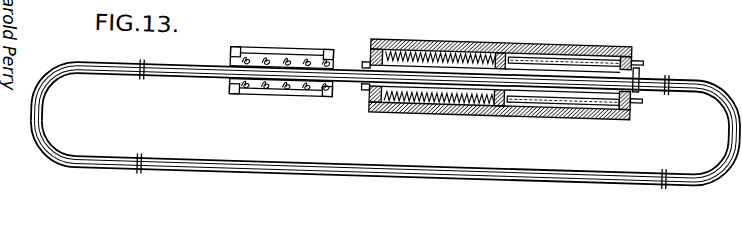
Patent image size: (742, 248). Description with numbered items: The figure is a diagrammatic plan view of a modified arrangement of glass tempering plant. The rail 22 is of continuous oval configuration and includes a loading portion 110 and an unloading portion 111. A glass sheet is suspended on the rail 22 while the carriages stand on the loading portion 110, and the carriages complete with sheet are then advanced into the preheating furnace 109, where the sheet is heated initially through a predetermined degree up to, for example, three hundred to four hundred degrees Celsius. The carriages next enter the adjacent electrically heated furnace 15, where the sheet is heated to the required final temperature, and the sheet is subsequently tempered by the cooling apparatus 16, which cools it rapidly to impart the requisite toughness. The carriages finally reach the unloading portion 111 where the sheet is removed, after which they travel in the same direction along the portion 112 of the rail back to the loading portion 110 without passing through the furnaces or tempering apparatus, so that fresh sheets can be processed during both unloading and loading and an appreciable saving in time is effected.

The furnace 15 is at (427, 55).
The cooling apparatus 16 is at (273, 50).
The rail 22 is at (202, 74).
The preheating furnace 109 is at (557, 56).
The loading portion 110 is at (658, 62).
The unloading portion 111 is at (168, 66).
The return portion of rail 112 is at (440, 156).